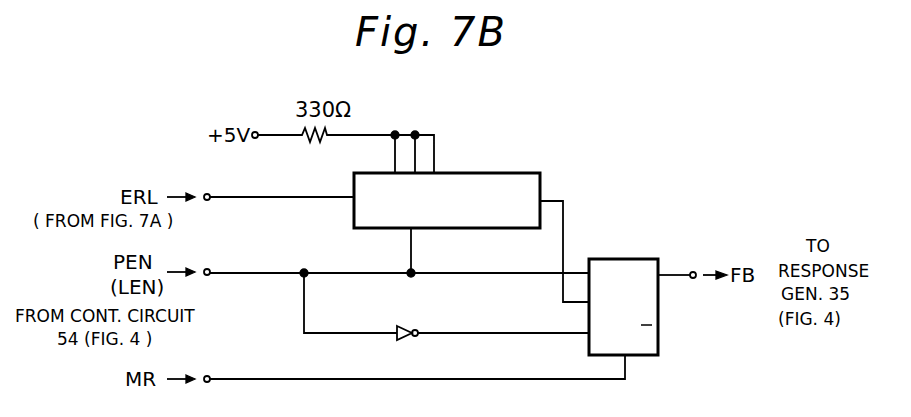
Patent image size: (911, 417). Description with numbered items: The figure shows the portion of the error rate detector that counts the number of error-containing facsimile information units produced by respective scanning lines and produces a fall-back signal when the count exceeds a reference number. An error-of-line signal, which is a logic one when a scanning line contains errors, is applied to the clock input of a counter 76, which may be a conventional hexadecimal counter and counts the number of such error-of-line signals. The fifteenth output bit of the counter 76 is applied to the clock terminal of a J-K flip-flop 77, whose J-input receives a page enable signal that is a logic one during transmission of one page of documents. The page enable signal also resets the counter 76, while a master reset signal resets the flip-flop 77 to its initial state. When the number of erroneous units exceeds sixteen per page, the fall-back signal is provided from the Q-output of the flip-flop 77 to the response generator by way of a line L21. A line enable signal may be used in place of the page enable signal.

The counter 76 is at (508, 173).
The J-K flip-flop 77 is at (620, 259).
The line L21 is at (675, 274).